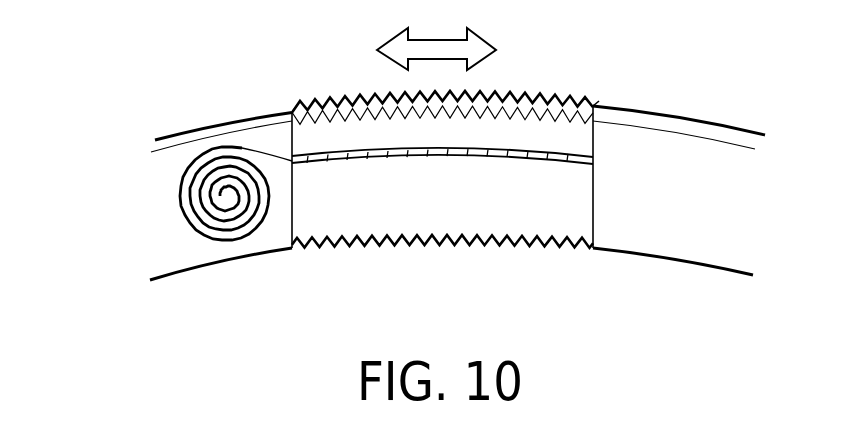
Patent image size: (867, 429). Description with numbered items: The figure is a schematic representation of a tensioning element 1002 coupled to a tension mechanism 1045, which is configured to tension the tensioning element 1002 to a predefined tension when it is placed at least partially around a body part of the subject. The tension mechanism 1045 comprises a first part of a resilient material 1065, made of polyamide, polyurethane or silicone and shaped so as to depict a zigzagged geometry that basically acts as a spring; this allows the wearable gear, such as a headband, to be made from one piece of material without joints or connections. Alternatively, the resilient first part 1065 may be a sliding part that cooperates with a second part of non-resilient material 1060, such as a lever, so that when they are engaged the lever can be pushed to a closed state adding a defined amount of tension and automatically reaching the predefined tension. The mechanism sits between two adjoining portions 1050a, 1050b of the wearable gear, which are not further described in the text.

The tension mechanism 1045 is at (126, 178).
The second part of non-resilient material 1060 is at (315, 153).
The first part of resilient material 1065 is at (523, 103).
The tensioning element 1002 is at (438, 218).
The first housing section 1050a is at (182, 255).
The second housing section 1050b is at (705, 233).